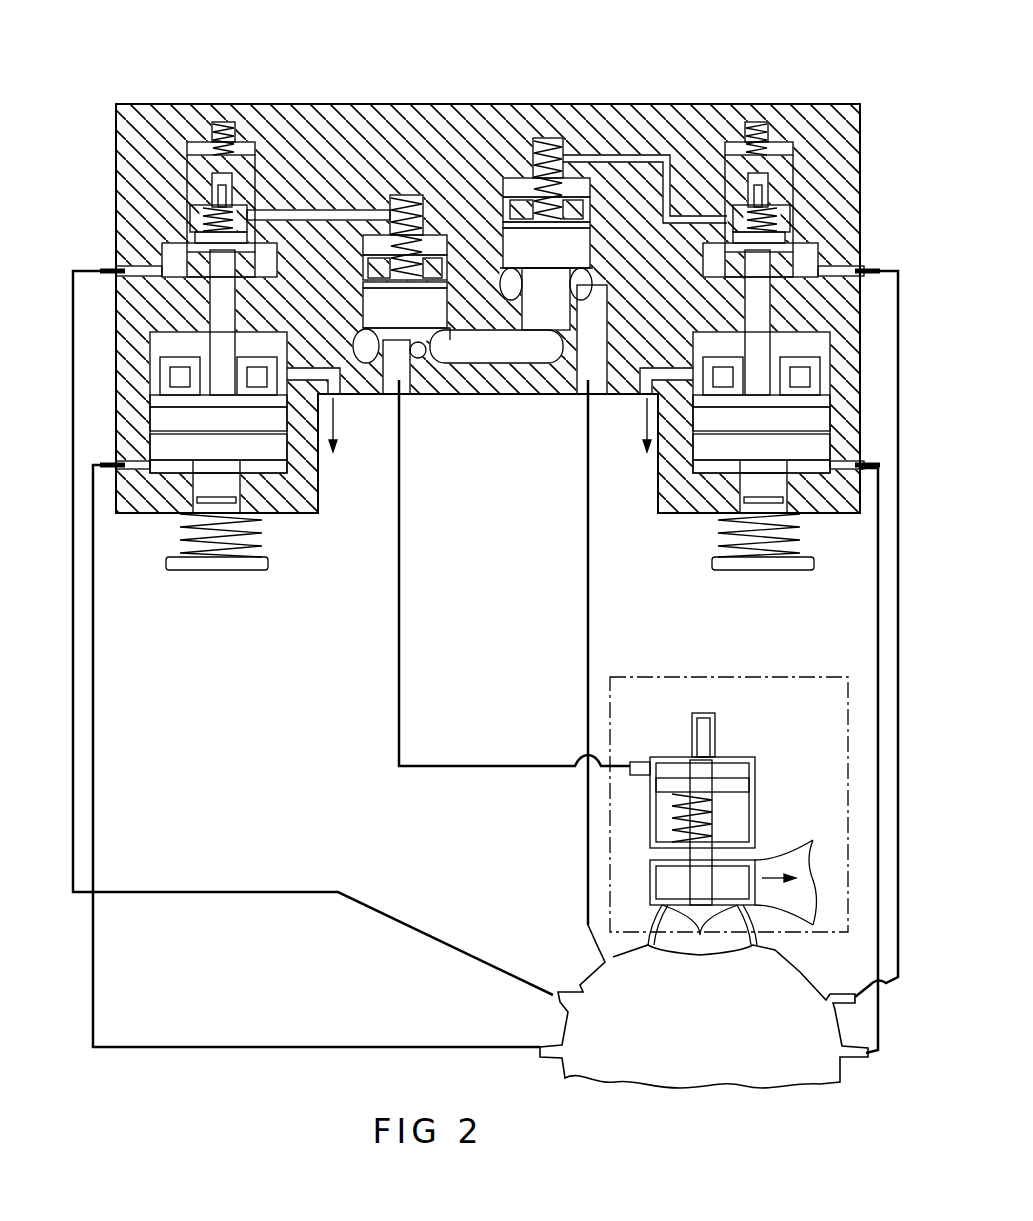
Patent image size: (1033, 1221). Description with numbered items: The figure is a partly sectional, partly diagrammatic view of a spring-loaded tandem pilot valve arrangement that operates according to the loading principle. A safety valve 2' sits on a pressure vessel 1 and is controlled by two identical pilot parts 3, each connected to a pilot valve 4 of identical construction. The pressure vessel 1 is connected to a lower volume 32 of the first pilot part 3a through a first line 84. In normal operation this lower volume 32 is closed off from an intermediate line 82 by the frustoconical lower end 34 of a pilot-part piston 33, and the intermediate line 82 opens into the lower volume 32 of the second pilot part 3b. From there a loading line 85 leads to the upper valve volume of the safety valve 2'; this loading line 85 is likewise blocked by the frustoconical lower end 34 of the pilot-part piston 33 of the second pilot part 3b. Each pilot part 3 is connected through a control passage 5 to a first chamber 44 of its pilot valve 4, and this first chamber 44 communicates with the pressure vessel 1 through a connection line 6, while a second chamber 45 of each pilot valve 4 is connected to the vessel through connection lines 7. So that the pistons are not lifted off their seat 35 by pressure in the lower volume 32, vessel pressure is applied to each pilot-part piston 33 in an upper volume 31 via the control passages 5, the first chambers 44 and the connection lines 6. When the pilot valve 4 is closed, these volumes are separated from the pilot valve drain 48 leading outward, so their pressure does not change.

The pressure vessel 1 is at (800, 1072).
The safety valve 2' is at (729, 764).
The pilot part 3 is at (447, 230).
The first pilot part 3a is at (670, 63).
The second pilot part 3b is at (455, 63).
The upper volume 31 is at (437, 232).
The pilot-part piston 33 is at (383, 290).
The frustoconical lower end 34 is at (358, 330).
The seat 35 is at (420, 357).
The lower volume 32 is at (362, 335).
The pilot valve 4 is at (180, 103).
The first chamber 44 is at (165, 215).
The second chamber 45 is at (175, 517).
The pilot valve drain 48 is at (352, 392).
The control passage 5 is at (672, 180).
The connection line 6 is at (898, 652).
The connection line 7 is at (878, 608).
The intermediate line 82 is at (495, 353).
The first line 84 is at (588, 598).
The loading line 85 is at (399, 597).